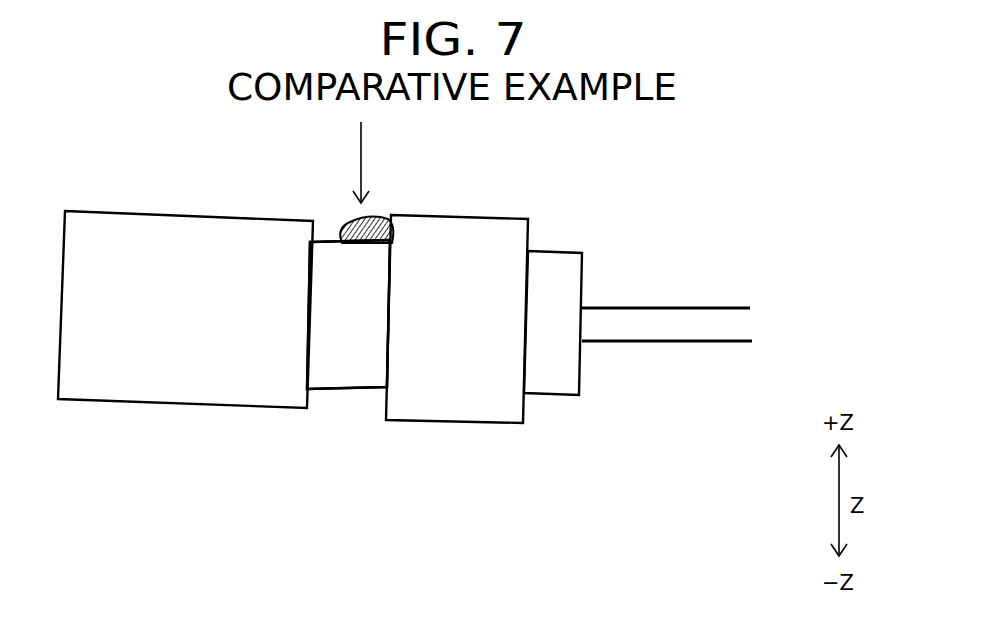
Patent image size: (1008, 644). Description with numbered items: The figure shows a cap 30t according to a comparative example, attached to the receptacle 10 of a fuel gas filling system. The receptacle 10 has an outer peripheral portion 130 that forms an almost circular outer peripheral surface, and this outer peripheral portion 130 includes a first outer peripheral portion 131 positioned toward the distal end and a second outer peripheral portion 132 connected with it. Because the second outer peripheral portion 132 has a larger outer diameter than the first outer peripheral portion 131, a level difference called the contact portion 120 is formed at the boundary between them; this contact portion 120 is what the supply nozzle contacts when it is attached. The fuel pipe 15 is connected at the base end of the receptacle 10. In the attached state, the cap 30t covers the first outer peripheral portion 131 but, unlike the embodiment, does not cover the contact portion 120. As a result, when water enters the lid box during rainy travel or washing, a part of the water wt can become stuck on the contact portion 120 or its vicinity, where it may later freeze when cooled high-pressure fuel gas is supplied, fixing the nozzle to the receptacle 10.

The cap 30t is at (233, 216).
The receptacle 10 is at (548, 222).
The water wt is at (378, 218).
The outer peripheral portion 130 is at (464, 217).
The first outer peripheral portion 131 is at (333, 390).
The contact portion 120 is at (383, 400).
The second outer peripheral portion 132 is at (453, 422).
The fuel pipe 15 is at (722, 308).